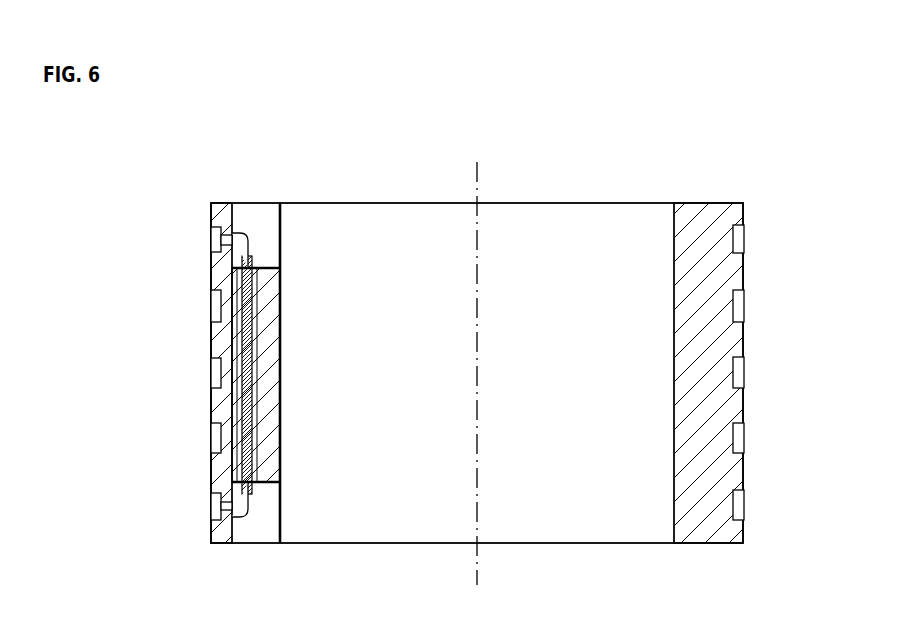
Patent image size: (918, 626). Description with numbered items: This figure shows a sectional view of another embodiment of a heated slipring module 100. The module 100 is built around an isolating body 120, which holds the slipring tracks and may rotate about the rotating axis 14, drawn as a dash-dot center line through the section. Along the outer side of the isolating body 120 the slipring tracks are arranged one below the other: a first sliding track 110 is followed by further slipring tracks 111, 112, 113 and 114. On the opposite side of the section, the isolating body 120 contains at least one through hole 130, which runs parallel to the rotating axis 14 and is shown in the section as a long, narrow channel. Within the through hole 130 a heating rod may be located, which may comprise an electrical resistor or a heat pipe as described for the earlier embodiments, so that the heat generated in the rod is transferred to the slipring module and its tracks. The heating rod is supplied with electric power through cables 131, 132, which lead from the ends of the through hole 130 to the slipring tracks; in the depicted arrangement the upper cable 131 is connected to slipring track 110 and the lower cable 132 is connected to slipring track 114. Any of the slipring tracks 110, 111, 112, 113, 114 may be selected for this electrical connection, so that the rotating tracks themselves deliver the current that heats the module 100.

The first slipring module 100 is at (584, 174).
The rotating axis 14 is at (477, 290).
The isolating body 120 is at (693, 374).
The first sliding track 110 is at (738, 240).
The slipring track 111 is at (738, 307).
The slipring track 112 is at (738, 374).
The slipring track 113 is at (738, 440).
The slipring track 114 is at (738, 507).
The through hole 130 is at (250, 385).
The cable 131 is at (247, 243).
The cable 132 is at (247, 492).